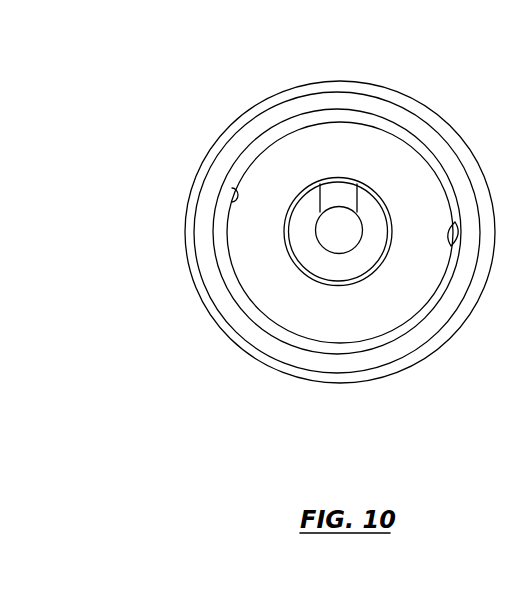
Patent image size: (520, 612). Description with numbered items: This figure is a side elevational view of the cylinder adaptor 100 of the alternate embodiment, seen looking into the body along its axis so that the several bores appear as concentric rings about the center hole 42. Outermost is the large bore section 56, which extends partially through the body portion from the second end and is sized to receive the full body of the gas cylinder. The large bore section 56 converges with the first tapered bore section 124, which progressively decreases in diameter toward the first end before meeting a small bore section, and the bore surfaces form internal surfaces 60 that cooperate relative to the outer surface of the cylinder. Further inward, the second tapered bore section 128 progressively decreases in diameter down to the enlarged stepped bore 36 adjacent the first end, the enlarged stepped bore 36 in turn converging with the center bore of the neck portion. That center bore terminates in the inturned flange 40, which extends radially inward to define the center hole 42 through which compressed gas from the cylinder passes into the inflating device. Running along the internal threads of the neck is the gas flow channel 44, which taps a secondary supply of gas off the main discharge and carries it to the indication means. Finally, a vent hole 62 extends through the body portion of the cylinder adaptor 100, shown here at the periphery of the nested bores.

The cylinder adaptor 100 is at (212, 86).
The first tapered bore section 124 is at (395, 128).
The internal surfaces 60 is at (232, 192).
The large bore section 56 is at (215, 258).
The second tapered bore section 128 is at (277, 240).
The enlarged stepped bore 36 is at (307, 190).
The gas flow channel 44 is at (336, 192).
The inturned flange 40 is at (377, 236).
The center hole 42 is at (353, 244).
The vent hole 62 is at (446, 240).